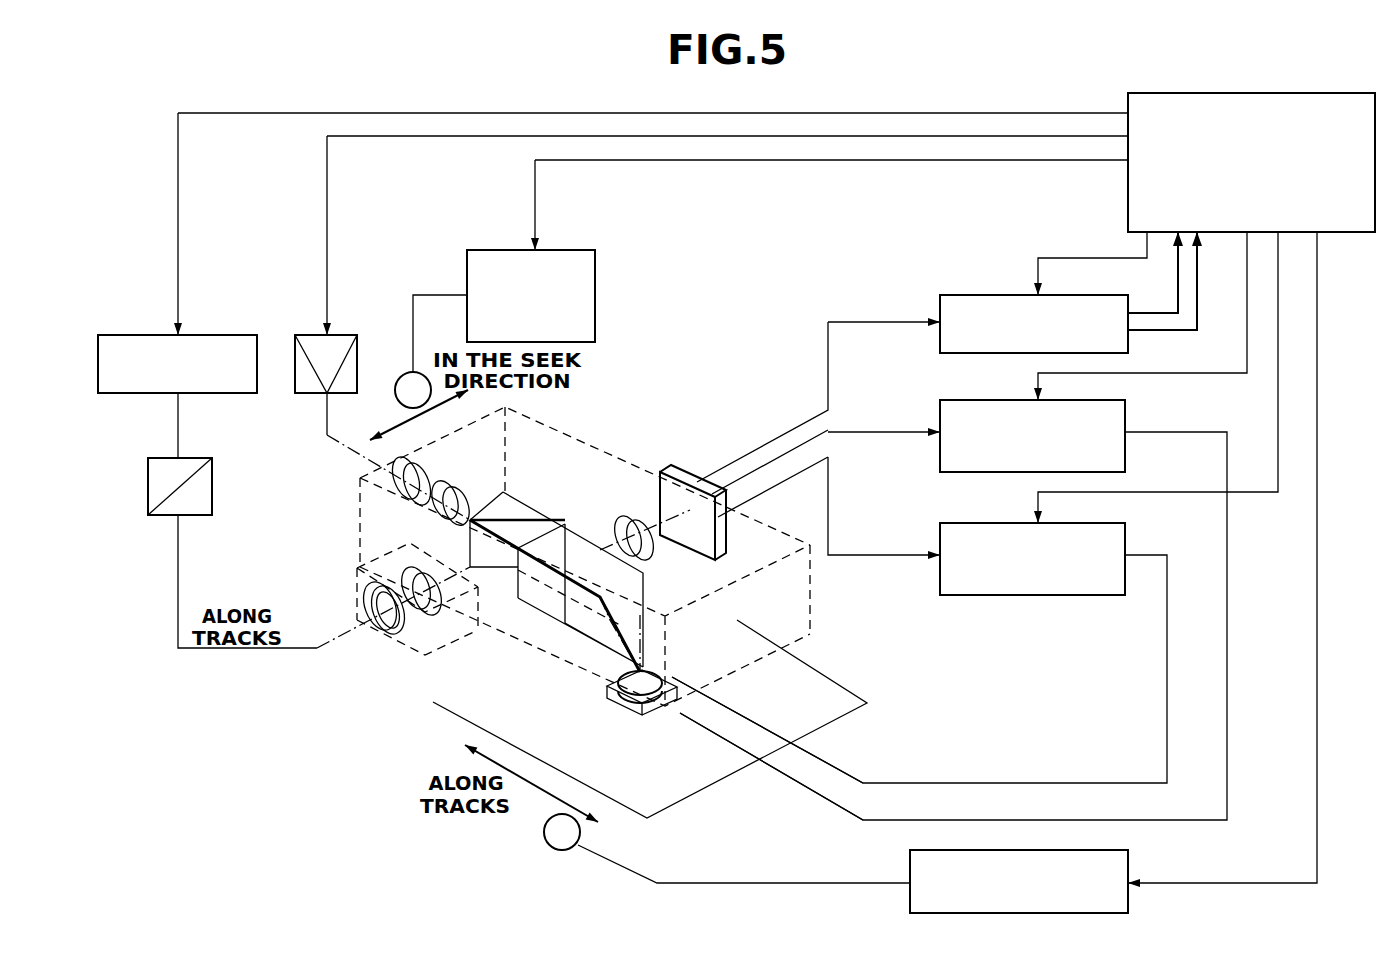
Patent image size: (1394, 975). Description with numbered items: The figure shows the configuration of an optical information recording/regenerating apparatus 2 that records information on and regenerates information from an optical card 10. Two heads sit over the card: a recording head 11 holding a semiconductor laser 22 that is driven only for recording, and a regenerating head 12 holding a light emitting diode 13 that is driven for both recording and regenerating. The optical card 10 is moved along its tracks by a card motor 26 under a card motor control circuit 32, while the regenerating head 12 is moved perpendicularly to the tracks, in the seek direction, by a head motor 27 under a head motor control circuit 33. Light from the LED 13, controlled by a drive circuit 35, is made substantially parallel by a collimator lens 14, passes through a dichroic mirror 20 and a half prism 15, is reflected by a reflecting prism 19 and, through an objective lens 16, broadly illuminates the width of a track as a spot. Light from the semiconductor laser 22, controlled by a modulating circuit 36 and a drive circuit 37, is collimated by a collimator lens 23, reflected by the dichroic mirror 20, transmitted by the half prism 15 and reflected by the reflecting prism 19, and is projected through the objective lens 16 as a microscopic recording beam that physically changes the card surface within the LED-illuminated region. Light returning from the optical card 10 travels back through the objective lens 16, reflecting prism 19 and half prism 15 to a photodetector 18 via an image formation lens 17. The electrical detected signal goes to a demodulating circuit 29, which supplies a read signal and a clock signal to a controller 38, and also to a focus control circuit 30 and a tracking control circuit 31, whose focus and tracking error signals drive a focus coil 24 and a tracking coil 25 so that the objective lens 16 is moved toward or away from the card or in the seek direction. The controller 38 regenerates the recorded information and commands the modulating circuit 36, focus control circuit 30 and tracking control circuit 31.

The optical information recording/regenerating apparatus 2 is at (908, 108).
The optical card 10 is at (868, 703).
The recording head 11 is at (432, 650).
The regenerating head 12 is at (812, 612).
The light emitting diode 13 is at (398, 489).
The collimator lens 14 is at (452, 493).
The half prism 15 is at (538, 618).
The objective lens 16 is at (620, 700).
The image formation lens 17 is at (648, 548).
The photodetector 18 is at (718, 528).
The reflecting prism 19 is at (655, 604).
The dichroic mirror 20 is at (522, 512).
The semiconductor laser 22 is at (372, 598).
The collimator lens 23 is at (450, 598).
The focus coil 24 is at (632, 718).
The tracking coil 25 is at (680, 705).
The card motor 26 is at (550, 845).
The head motor 27 is at (405, 374).
The demodulating circuit 29 is at (940, 300).
The focus control circuit 30 is at (940, 410).
The tracking control circuit 31 is at (940, 530).
The card motor control circuit 32 is at (1128, 860).
The head motor control circuit 33 is at (495, 252).
The drive circuit 35 is at (307, 335).
The modulating circuit 36 is at (145, 335).
The drive circuit 37 is at (212, 460).
The controller 38 is at (1240, 93).